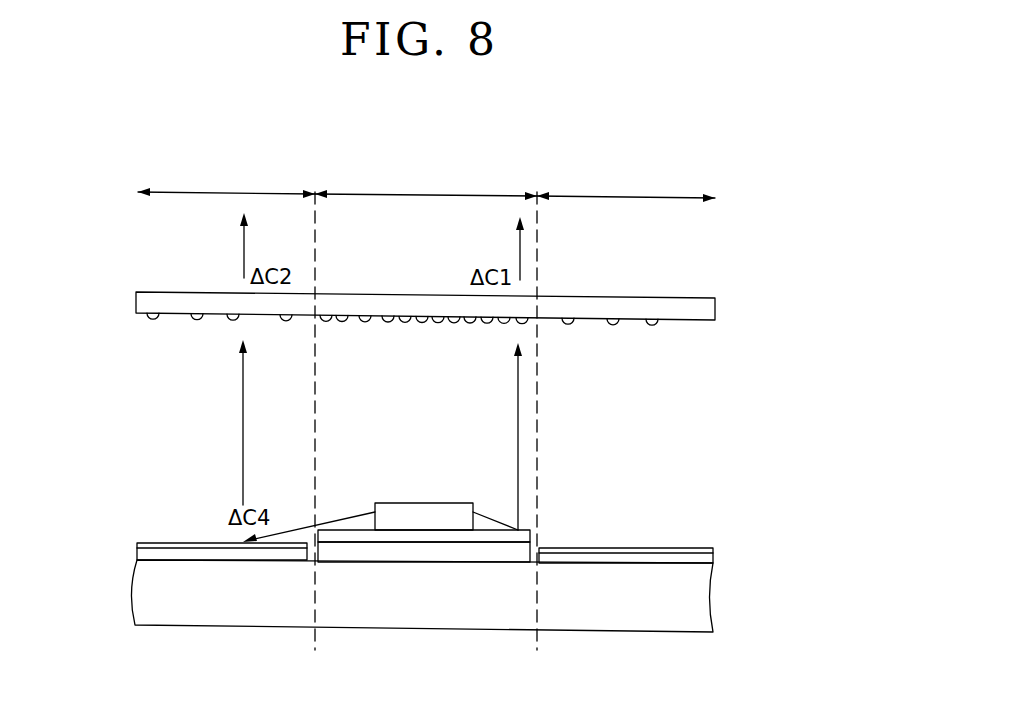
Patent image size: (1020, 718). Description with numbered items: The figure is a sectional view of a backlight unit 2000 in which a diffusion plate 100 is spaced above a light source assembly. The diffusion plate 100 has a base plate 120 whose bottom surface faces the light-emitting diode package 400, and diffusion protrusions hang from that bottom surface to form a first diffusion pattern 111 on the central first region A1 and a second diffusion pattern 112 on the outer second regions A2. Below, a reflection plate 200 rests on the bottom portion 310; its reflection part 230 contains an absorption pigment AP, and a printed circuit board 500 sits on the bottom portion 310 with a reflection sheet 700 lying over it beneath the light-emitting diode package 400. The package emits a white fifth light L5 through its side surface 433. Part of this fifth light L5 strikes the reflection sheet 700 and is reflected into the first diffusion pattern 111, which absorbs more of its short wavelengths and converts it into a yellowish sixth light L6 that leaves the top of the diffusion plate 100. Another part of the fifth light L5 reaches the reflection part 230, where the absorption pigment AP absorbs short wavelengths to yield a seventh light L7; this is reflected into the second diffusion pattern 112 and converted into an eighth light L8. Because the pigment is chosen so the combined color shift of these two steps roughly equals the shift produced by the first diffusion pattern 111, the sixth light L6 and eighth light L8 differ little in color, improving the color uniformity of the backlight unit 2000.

The backlight unit 2000 is at (742, 107).
The diffusion plate 100 is at (708, 288).
The base plate 120 is at (148, 300).
The first diffusion pattern 111 is at (436, 344).
The second diffusion pattern 112 is at (153, 342).
The reflection plate 200 is at (142, 531).
The reflection part 230 is at (389, 615).
The bottom portion 310 is at (145, 590).
The light-emitting diode package 400 is at (420, 503).
The side surface 433 is at (363, 505).
The printed circuit board 500 is at (428, 552).
The reflection sheet 700 is at (367, 535).
The absorption pigment AP is at (203, 548).
The fifth light L5 is at (518, 403).
The sixth light L6 is at (520, 248).
The seventh light L7 is at (243, 438).
The eighth light L8 is at (244, 245).
The first region A1 is at (426, 186).
The second region A2 is at (426, 186).